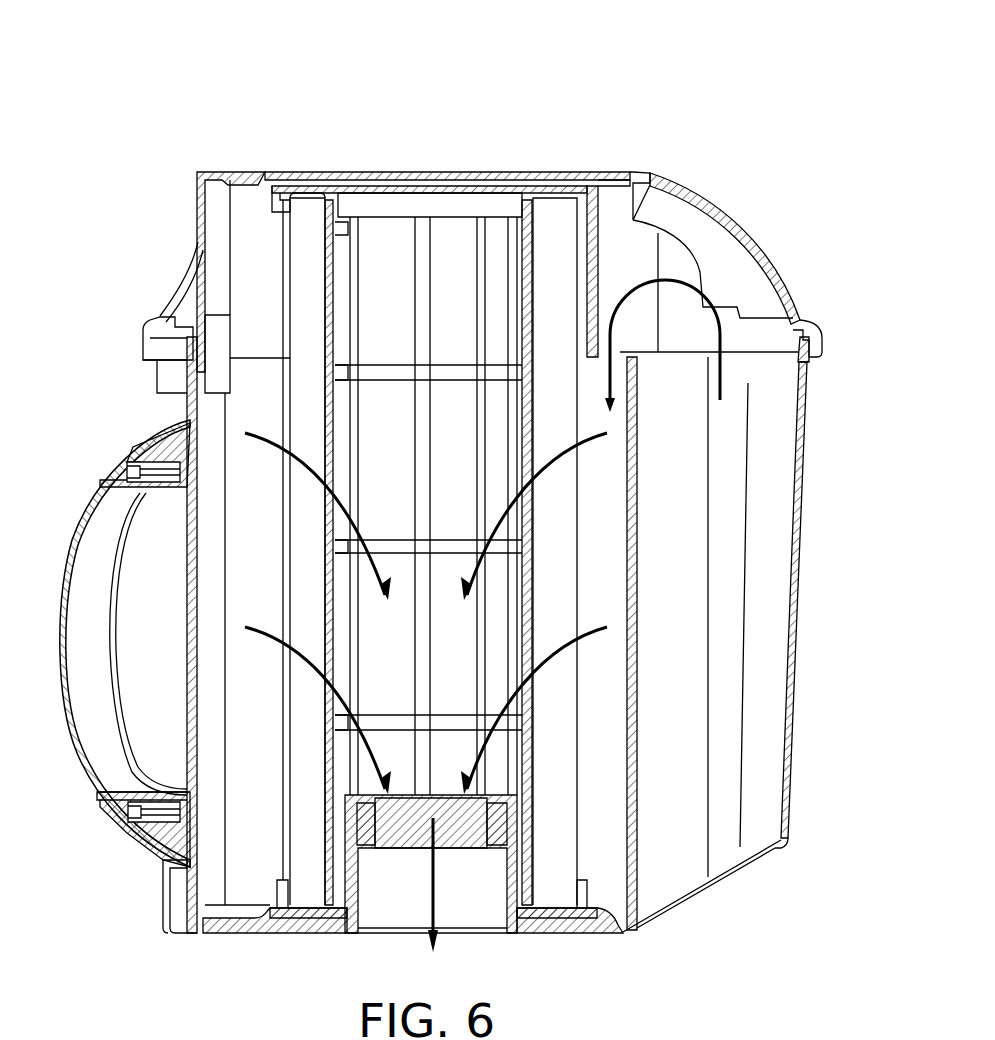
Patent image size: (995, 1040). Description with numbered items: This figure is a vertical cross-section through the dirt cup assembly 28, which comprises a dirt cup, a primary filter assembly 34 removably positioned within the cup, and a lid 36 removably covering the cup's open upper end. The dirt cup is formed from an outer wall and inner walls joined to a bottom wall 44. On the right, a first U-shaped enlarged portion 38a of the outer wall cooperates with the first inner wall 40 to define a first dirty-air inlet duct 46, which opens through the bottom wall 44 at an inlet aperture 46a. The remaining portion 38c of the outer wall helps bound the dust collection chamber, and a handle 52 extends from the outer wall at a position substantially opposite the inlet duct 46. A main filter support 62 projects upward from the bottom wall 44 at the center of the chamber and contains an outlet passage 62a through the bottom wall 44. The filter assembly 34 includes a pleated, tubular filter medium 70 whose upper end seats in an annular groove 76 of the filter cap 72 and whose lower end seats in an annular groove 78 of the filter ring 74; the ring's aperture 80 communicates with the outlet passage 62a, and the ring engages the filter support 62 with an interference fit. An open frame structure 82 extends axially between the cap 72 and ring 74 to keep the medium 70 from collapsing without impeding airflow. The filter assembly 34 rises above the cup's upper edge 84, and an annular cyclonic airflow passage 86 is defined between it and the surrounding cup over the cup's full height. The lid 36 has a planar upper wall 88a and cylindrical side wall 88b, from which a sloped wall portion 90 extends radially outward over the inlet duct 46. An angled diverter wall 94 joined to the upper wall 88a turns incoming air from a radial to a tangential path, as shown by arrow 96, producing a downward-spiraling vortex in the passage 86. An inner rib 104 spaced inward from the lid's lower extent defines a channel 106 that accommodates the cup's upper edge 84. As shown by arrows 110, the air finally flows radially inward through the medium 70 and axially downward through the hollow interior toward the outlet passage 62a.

The dirt cup assembly 28 is at (660, 150).
The primary filter assembly 34 is at (632, 912).
The lid 36 is at (192, 176).
The first U-shaped portion of the outer wall 38a is at (795, 658).
The remaining portion of the outer wall 38c is at (175, 388).
The first inner wall 40 is at (635, 850).
The bottom wall 44 is at (298, 915).
The first inlet duct 46 is at (760, 725).
The inlet aperture 46a is at (768, 845).
The handle 52 is at (92, 528).
The main filter support 62 is at (502, 895).
The outlet passage 62a is at (408, 914).
The filter medium 70 is at (312, 215).
The filter cap 72 is at (402, 181).
The filter ring 74 is at (548, 900).
The annular groove 76 is at (292, 200).
The annular groove 78 is at (288, 898).
The aperture 80 is at (383, 800).
The open frame structure 82 is at (425, 493).
The upper edge 84 is at (186, 325).
The annular cyclonic airflow passage 86 is at (222, 548).
The upper wall 88a is at (473, 176).
The side wall 88b is at (203, 228).
The first sloped wall portion 90 is at (700, 197).
The angled diverter wall 94 is at (597, 305).
The arrow 96 is at (692, 283).
The inner rib 104 is at (795, 370).
The channel 106 is at (775, 352).
The arrows 110 is at (262, 436).